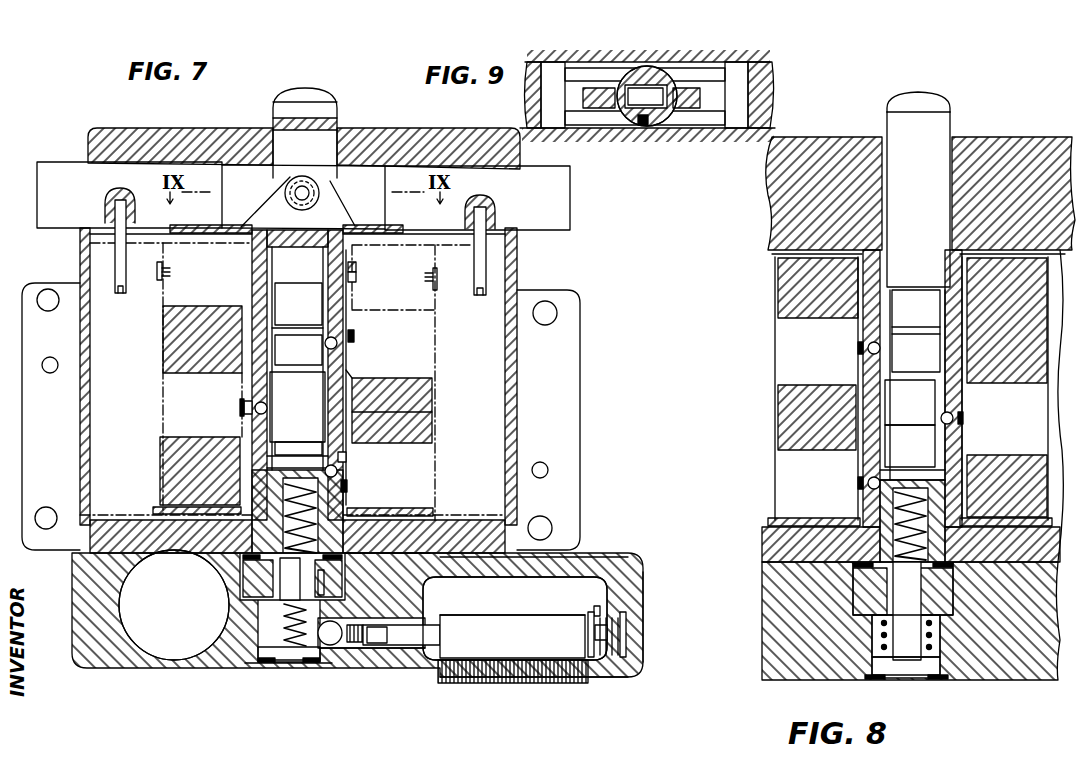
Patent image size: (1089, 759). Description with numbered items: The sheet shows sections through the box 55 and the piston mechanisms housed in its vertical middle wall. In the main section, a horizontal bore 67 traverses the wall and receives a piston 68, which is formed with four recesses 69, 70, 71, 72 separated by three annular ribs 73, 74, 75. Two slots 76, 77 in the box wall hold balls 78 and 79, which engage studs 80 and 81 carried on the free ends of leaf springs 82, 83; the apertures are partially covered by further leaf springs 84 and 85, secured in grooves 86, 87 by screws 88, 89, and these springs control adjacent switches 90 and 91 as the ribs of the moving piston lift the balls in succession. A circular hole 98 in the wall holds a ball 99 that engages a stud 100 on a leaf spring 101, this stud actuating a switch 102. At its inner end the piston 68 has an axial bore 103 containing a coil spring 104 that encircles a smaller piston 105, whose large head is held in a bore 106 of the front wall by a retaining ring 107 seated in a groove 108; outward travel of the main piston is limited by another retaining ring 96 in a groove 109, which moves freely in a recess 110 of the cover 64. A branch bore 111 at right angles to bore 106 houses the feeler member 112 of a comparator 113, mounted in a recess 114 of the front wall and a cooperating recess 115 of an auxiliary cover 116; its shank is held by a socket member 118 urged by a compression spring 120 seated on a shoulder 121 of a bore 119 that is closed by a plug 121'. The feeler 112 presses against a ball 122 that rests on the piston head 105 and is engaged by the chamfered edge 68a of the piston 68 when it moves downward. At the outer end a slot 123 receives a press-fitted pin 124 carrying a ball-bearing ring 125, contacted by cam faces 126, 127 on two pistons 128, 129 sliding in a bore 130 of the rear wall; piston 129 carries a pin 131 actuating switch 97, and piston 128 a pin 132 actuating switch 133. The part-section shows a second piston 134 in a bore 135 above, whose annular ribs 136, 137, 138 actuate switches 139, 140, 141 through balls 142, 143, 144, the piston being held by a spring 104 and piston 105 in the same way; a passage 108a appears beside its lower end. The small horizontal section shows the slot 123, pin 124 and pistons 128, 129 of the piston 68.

In FIG. 7, the box 55 is at (80, 324).
In FIG. 8, the box 55 is at (1032, 167).
In FIG. 7, the cover 64 is at (78, 599).
In FIG. 7, the horizontal bore 67 is at (255, 282).
In FIG. 7, the piston 68 is at (327, 100).
In FIG. 9, the piston 68 is at (672, 72).
In FIG. 7, the chamfered edge 68a is at (387, 570).
In FIG. 7, the recess 69 is at (258, 296).
In FIG. 7, the recess 70 is at (267, 345).
In FIG. 7, the recess 71 is at (256, 384).
In FIG. 7, the recess 72 is at (233, 463).
In FIG. 7, the annular rib 73 is at (290, 324).
In FIG. 7, the annular rib 74 is at (291, 368).
In FIG. 7, the annular rib 75 is at (289, 442).
In FIG. 7, the slot 76 is at (347, 326).
In FIG. 7, the slot 77 is at (347, 460).
In FIG. 7, the ball 78 is at (322, 344).
In FIG. 7, the ball 79 is at (342, 452).
In FIG. 7, the stud 80 is at (340, 344).
In FIG. 7, the stud 81 is at (340, 471).
In FIG. 7, the leaf spring 82 is at (355, 336).
In FIG. 7, the leaf spring 83 is at (350, 489).
In FIG. 7, the leaf spring 84 is at (349, 293).
In FIG. 7, the leaf spring 85 is at (358, 433).
In FIG. 7, the groove 86 is at (357, 263).
In FIG. 7, the groove 87 is at (350, 378).
In FIG. 7, the screw 88 is at (358, 272).
In FIG. 7, the screw 89 is at (362, 397).
In FIG. 7, the switch 90 is at (430, 334).
In FIG. 7, the switch 91 is at (426, 464).
In FIG. 7, the retaining ring 96 is at (331, 582).
In FIG. 7, the switch 97 is at (436, 300).
In FIG. 7, the circular hole 98 is at (299, 480).
In FIG. 8, the circular hole 98 is at (910, 526).
In FIG. 7, the ball 99 is at (268, 408).
In FIG. 7, the stud 100 is at (243, 413).
In FIG. 7, the leaf spring 101 is at (247, 408).
In FIG. 7, the switch 102 is at (170, 388).
In FIG. 7, the axial bore 103 is at (277, 586).
In FIG. 7, the coil spring 104 is at (250, 592).
In FIG. 8, the coil spring 104 is at (892, 582).
In FIG. 7, the smaller piston 105 is at (297, 625).
In FIG. 8, the smaller piston 105 is at (878, 665).
In FIG. 7, the bore 106 is at (292, 636).
In FIG. 7, the retaining ring 107 is at (262, 665).
In FIG. 8, the retaining ring 107 is at (928, 681).
In FIG. 7, the groove 108 is at (330, 656).
In FIG. 8, the passage 108a is at (953, 608).
In FIG. 7, the groove 109 is at (295, 579).
In FIG. 7, the recess 110 is at (233, 600).
In FIG. 7, the branch bore 111 is at (372, 632).
In FIG. 7, the feeler member 112 is at (380, 639).
In FIG. 7, the comparator 113 is at (478, 621).
In FIG. 7, the recess 114 is at (519, 524).
In FIG. 7, the recess 115 is at (562, 583).
In FIG. 7, the auxiliary cover 116 is at (626, 592).
In FIG. 7, the socket member 118 is at (601, 613).
In FIG. 7, the bore 119 is at (630, 673).
In FIG. 7, the compression spring 120 is at (632, 637).
In FIG. 7, the shoulder 121 is at (637, 630).
In FIG. 7, the plug 121' is at (655, 638).
In FIG. 7, the ball 122 is at (336, 602).
In FIG. 7, the slot 123 is at (318, 146).
In FIG. 7, the pin 124 is at (303, 201).
In FIG. 9, the pin 124 is at (632, 128).
In FIG. 7, the ball-bearing ring 125 is at (293, 240).
In FIG. 7, the cam face 126 is at (261, 204).
In FIG. 7, the cam face 127 is at (351, 214).
In FIG. 7, the piston 128 is at (50, 190).
In FIG. 9, the piston 128 is at (551, 73).
In FIG. 7, the piston 129 is at (553, 202).
In FIG. 9, the piston 129 is at (738, 73).
In FIG. 7, the bore 130 is at (393, 141).
In FIG. 7, the pin 131 is at (488, 267).
In FIG. 7, the pin 132 is at (118, 250).
In FIG. 7, the switch 133 is at (170, 294).
In FIG. 8, the piston 134 is at (898, 118).
In FIG. 8, the bore 135 is at (948, 171).
In FIG. 8, the annular rib 136 is at (916, 331).
In FIG. 8, the annular rib 137 is at (916, 378).
In FIG. 8, the annular rib 138 is at (898, 463).
In FIG. 8, the switch 139 is at (786, 342).
In FIG. 8, the switch 140 is at (1016, 436).
In FIG. 8, the switch 141 is at (783, 478).
In FIG. 8, the ball 142 is at (864, 352).
In FIG. 8, the ball 143 is at (955, 415).
In FIG. 8, the ball 144 is at (866, 489).